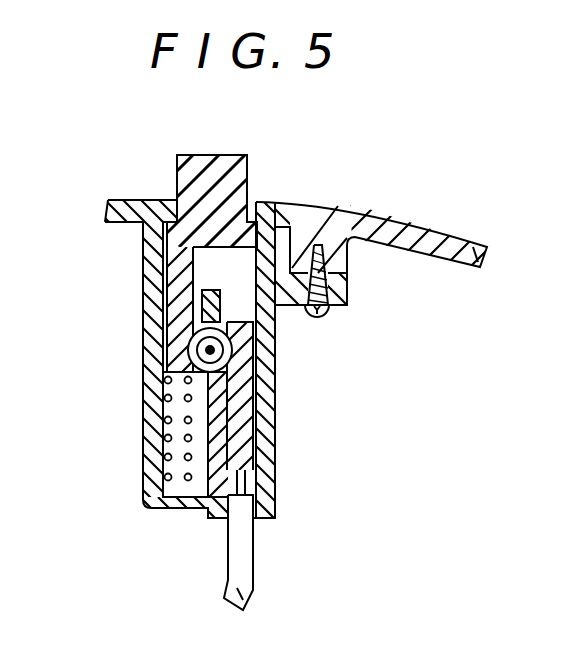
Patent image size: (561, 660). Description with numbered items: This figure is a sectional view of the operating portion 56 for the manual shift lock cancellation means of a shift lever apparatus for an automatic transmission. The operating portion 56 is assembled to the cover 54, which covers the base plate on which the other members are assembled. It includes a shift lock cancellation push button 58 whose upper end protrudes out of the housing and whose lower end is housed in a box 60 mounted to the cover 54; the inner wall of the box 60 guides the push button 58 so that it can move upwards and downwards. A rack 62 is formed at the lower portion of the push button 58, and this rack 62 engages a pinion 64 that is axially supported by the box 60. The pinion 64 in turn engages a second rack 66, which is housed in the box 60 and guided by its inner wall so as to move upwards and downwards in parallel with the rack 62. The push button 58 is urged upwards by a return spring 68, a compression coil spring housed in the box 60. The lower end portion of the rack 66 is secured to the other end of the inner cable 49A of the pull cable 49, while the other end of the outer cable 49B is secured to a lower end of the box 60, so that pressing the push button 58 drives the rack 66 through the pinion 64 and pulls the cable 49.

The pull cable 49 is at (266, 573).
The inner cable 49A is at (270, 478).
The outer cable 49B is at (250, 597).
The cover 54 is at (421, 226).
The operating portion 56 is at (128, 344).
The shift lock cancellation push button 58 is at (251, 174).
The box 60 is at (275, 396).
The rack 62 is at (198, 258).
The pinion 64 is at (202, 378).
The rack 66 is at (257, 352).
The return spring 68 is at (165, 455).